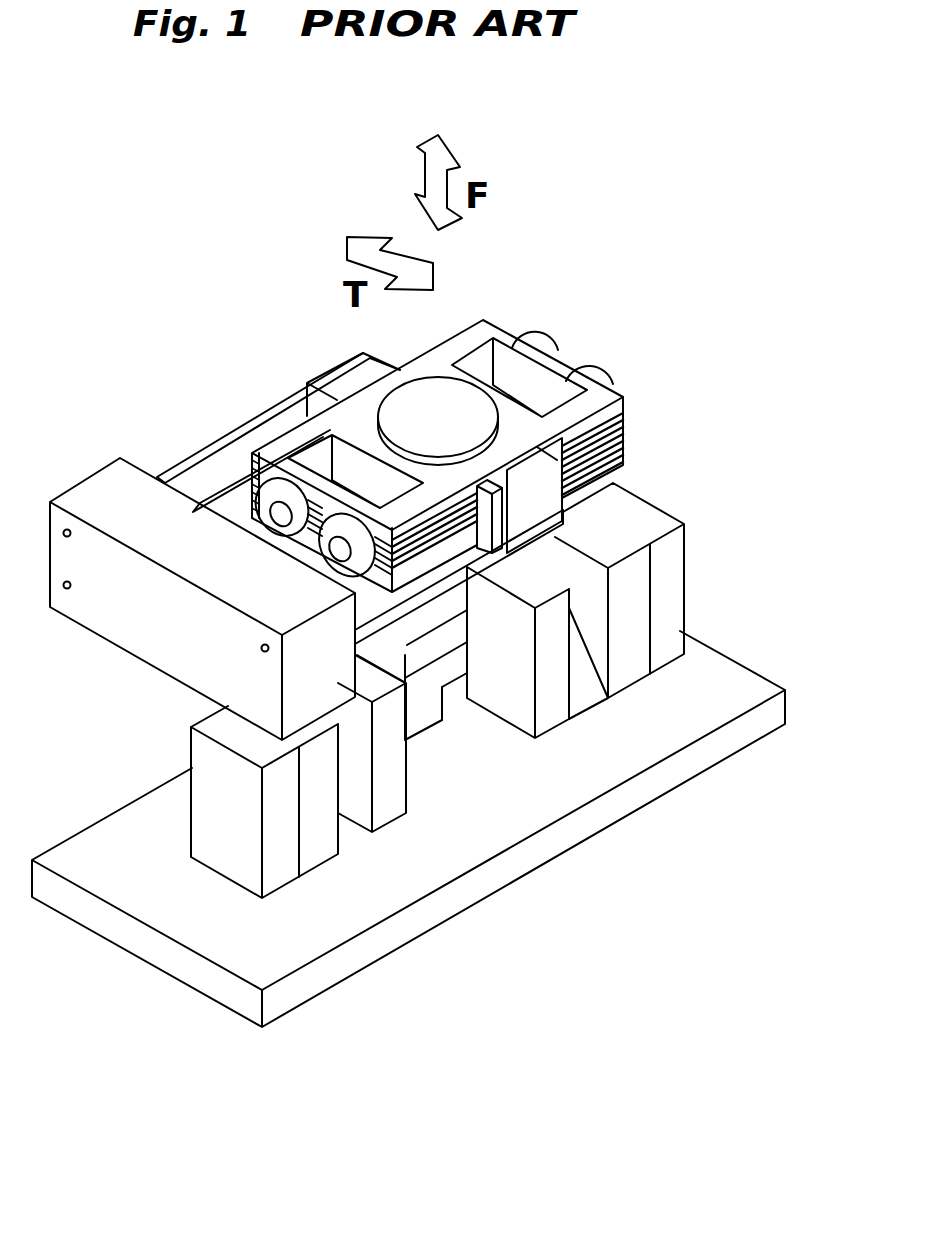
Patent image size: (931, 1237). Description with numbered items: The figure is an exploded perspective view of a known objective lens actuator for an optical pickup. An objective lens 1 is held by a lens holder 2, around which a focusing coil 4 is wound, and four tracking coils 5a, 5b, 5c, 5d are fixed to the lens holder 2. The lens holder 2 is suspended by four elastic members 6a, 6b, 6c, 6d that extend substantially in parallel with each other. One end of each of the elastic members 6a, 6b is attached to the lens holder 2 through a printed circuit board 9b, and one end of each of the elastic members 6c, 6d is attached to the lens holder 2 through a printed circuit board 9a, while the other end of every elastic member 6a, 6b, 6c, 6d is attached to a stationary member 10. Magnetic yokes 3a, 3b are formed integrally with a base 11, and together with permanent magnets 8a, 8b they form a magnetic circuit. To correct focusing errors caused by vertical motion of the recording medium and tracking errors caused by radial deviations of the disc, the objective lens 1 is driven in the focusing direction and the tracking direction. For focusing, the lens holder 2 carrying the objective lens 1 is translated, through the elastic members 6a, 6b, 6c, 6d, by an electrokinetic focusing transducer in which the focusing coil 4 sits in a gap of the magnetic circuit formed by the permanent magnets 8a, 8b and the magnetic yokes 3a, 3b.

The objective lens 1 is at (437, 400).
The lens holder 2 is at (600, 398).
The magnetic yoke 3a is at (510, 670).
The magnetic yoke 3b is at (388, 800).
The focusing coil 4 is at (623, 437).
The tracking coil 5a is at (532, 340).
The tracking coil 5b is at (593, 367).
The tracking coil 5c is at (328, 523).
The tracking coil 5d is at (270, 495).
The elastic member 6a is at (175, 468).
The elastic member 6b is at (220, 485).
The elastic member 6c is at (407, 567).
The elastic member 6d is at (440, 596).
The permanent magnet 8a is at (637, 610).
The permanent magnet 8b is at (313, 828).
The printed circuit board 9a is at (548, 508).
The printed circuit board 9b is at (343, 362).
The stationary member 10 is at (107, 610).
The base 11 is at (730, 697).